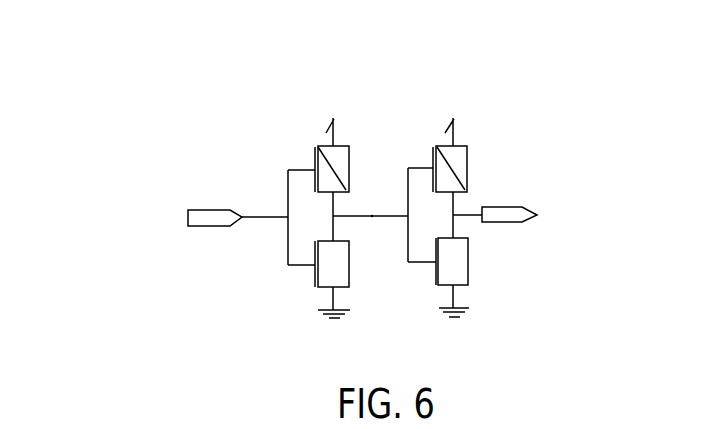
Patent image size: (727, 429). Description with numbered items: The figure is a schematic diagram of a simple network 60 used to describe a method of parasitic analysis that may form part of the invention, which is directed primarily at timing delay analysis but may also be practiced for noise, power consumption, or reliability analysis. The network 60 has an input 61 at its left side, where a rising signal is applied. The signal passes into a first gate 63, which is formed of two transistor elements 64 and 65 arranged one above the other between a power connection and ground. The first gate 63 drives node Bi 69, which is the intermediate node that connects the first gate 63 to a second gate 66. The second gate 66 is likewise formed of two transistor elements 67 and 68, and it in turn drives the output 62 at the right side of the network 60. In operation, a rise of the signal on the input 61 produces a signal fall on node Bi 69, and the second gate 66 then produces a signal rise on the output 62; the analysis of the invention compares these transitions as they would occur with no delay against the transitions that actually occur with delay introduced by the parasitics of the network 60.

The network 60 is at (166, 121).
The input 61 is at (210, 209).
The output 62 is at (505, 207).
The first gate 63 is at (362, 145).
The transistor element 64 is at (341, 143).
The transistor element 65 is at (318, 282).
The second gate 66 is at (483, 143).
The transistor element 67 is at (459, 143).
The transistor element 68 is at (460, 277).
The node Bi 69 is at (370, 217).